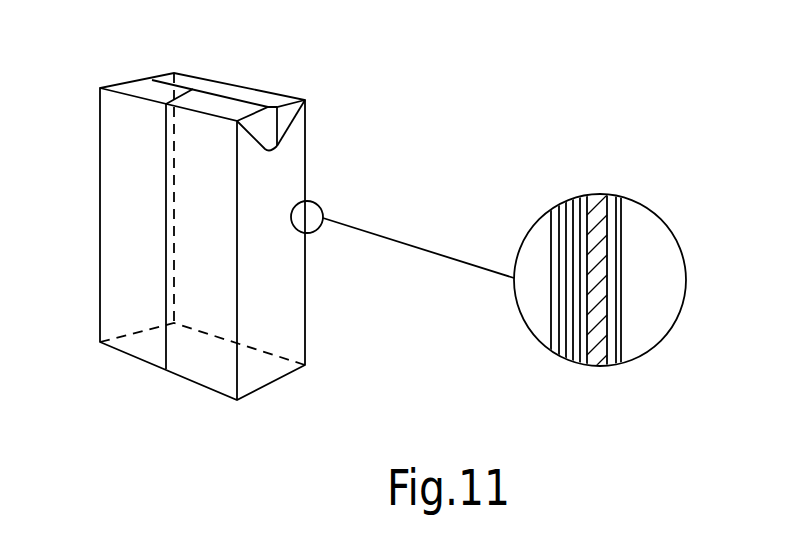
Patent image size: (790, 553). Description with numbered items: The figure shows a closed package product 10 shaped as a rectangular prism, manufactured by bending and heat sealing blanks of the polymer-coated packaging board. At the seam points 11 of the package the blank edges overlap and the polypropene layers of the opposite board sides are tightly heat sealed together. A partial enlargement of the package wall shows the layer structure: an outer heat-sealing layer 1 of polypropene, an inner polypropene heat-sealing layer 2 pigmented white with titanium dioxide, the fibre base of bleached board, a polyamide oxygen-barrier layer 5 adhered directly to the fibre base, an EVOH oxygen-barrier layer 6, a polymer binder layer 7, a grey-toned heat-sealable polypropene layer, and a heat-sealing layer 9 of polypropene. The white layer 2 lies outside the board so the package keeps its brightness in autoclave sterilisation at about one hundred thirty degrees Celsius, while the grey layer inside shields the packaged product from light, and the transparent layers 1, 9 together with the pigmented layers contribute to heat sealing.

The outer heat-sealing layer 1 is at (622, 203).
The inner polypropene heat-sealing layer 2 is at (610, 203).
The polyamide oxygen-barrier layer 5 is at (588, 203).
The EVOH oxygen-barrier layer 6 is at (580, 203).
The polymer binder layer 7 is at (570, 203).
The heat-sealing layer 9 is at (553, 203).
The package product 10 is at (98, 203).
The seam points 11 is at (166, 155).